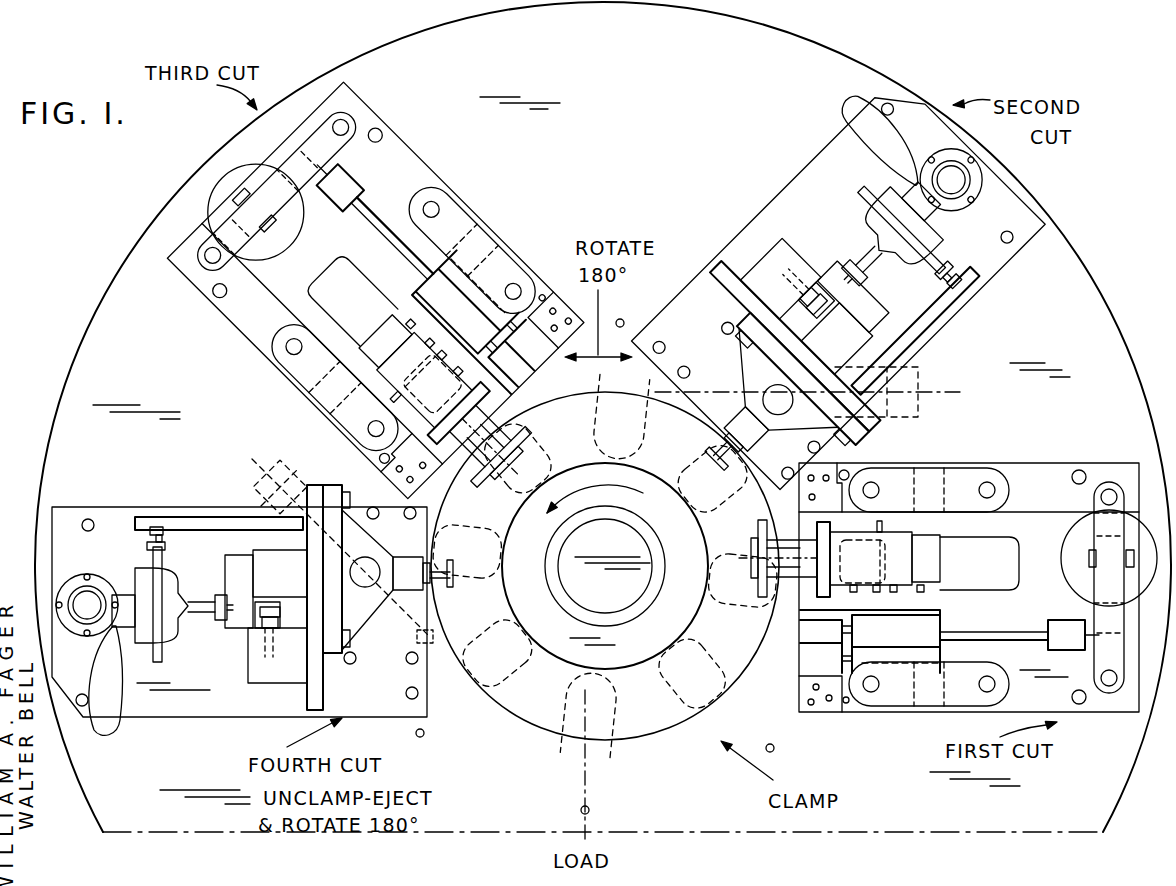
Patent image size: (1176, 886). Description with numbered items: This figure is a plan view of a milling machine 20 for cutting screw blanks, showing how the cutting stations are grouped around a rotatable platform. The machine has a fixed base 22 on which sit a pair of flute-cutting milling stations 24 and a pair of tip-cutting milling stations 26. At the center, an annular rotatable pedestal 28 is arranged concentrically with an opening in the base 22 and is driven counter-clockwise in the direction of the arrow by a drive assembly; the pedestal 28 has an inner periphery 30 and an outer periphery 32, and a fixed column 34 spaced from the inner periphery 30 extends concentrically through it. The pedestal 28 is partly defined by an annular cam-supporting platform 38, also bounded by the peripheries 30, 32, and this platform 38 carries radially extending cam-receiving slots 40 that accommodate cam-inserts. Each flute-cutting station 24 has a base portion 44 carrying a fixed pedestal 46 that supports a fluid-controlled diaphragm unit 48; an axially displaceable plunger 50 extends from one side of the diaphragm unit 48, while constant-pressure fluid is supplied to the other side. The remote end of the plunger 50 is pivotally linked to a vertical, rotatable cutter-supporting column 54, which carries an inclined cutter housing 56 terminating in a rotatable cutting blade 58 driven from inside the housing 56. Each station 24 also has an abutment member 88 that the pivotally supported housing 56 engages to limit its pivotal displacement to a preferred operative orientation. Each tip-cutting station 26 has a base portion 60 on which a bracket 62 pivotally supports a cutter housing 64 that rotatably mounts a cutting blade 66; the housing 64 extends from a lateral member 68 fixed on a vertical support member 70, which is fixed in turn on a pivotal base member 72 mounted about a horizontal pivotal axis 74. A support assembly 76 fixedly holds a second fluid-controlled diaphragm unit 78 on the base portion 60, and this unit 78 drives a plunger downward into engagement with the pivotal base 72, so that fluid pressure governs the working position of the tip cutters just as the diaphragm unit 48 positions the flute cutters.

The milling machine 20 is at (98, 270).
The fixed base 22 is at (603, 188).
The flute-cutting milling station 24 is at (825, 176).
The tip-cutting milling station 26 is at (403, 160).
The annular rotatable pedestal 28 is at (660, 745).
The inner periphery 30 is at (452, 720).
The outer periphery 32 is at (535, 730).
The fixed column 34 is at (592, 605).
The annular cam-supporting platform 38 is at (543, 713).
The cam-receiving slot 40 is at (598, 390).
The base portion 44 is at (192, 674).
The pedestal 46 is at (70, 577).
The fluid-controlled diaphragm unit 48 is at (138, 712).
The axially displaceable plunger 50 is at (200, 597).
The cutter-supporting column 54 is at (367, 582).
The cutter housing 56 is at (262, 589).
The cutting blade 58 is at (460, 567).
The base portion 60 is at (270, 292).
The bracket 62 is at (293, 363).
The cutter housing 64 is at (380, 343).
The cutting blade 66 is at (483, 477).
The lateral member 68 is at (377, 230).
The vertical support member 70 is at (350, 190).
The pivotal base member 72 is at (358, 284).
The pivotal axis 74 is at (400, 400).
The support assembly 76 is at (283, 159).
The fluid-controlled diaphragm unit 78 is at (212, 210).
The abutment member 88 is at (260, 610).